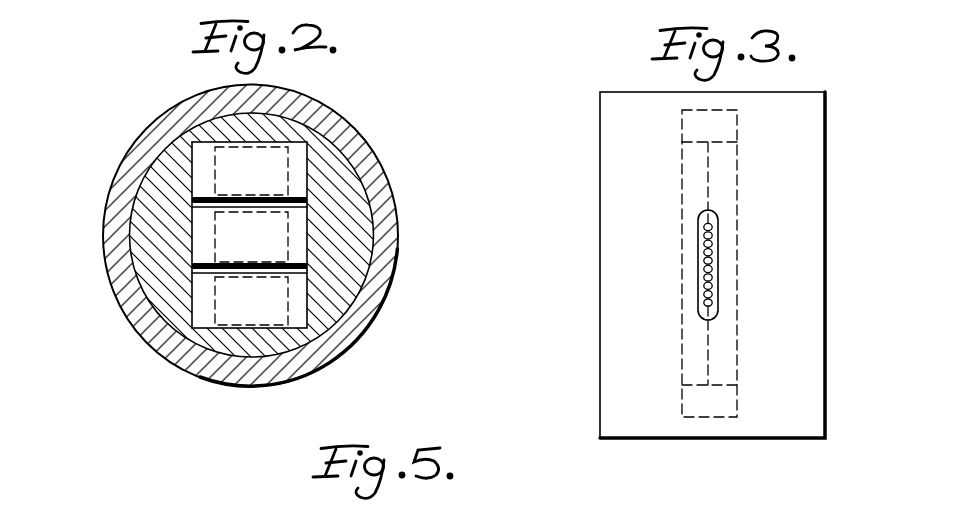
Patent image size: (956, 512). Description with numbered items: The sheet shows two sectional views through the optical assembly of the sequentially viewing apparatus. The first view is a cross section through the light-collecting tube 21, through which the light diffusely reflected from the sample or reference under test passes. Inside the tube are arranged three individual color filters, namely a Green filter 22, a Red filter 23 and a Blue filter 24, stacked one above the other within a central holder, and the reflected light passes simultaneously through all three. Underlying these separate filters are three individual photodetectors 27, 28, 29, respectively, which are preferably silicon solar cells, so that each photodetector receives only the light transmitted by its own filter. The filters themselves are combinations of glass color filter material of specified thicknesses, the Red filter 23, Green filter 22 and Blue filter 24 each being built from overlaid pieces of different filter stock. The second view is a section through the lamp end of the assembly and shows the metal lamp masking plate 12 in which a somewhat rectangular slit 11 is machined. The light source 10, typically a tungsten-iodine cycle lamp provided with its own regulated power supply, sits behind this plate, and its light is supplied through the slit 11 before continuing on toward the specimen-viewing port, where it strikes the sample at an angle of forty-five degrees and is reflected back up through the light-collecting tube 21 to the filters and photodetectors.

In FIG. 3, the light source 10 is at (715, 235).
In FIG. 3, the slit 11 is at (718, 290).
In FIG. 3, the lamp masking plate 12 is at (810, 137).
In FIG. 2, the light-collecting tube 21 is at (147, 133).
In FIG. 2, the Green filter 22 is at (300, 182).
In FIG. 2, the Red filter 23 is at (300, 240).
In FIG. 2, the Blue filter 24 is at (300, 302).
In FIG. 2, the photodetector 27 is at (280, 165).
In FIG. 2, the photodetector 28 is at (227, 243).
In FIG. 2, the photodetector 29 is at (310, 316).